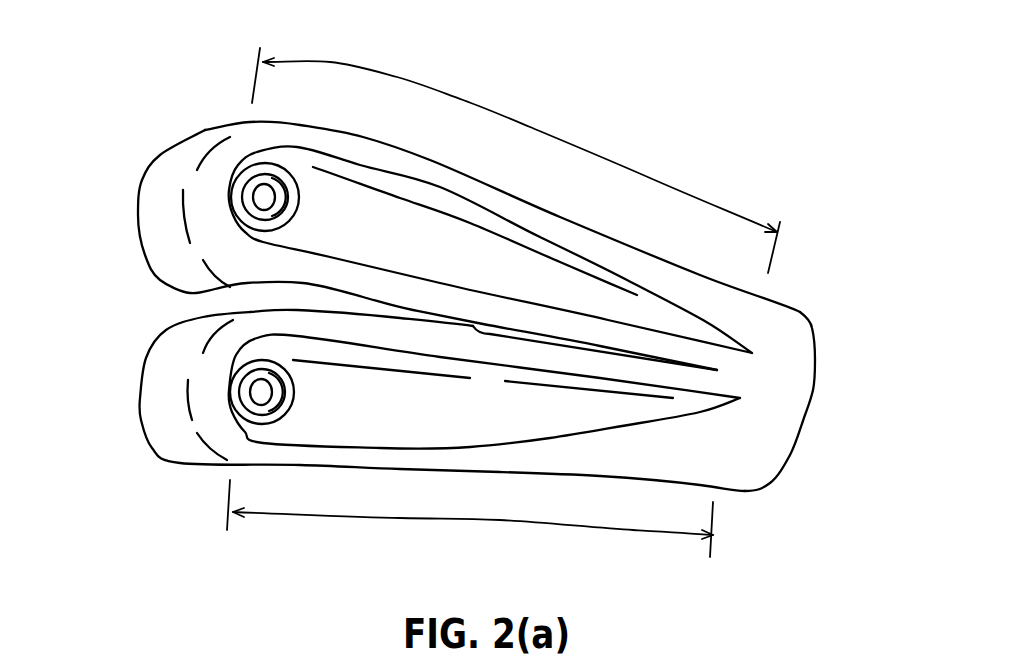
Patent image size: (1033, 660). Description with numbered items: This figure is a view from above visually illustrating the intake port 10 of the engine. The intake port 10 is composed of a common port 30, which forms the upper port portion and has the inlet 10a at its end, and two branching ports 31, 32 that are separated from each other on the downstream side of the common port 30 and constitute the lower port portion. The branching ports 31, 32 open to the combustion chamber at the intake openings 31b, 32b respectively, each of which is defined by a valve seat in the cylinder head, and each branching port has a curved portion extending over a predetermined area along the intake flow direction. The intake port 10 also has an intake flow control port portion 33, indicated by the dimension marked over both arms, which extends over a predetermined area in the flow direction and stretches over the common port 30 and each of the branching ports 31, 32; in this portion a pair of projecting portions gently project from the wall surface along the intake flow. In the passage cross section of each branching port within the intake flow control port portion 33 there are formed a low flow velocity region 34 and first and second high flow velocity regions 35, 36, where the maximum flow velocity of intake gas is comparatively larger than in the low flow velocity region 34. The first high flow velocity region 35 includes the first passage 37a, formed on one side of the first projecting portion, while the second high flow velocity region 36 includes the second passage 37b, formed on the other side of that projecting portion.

The intake port 10 is at (198, 98).
The inlet 10a is at (806, 404).
The common port 30 is at (760, 430).
The branching port 31 is at (331, 421).
The intake opening 31b is at (140, 404).
The branching port 32 is at (353, 210).
The intake opening 32b is at (137, 229).
The intake flow control port portion 33 is at (473, 100).
The low flow velocity region 34 is at (447, 245).
The first high flow velocity region 35 is at (483, 329).
The second high flow velocity region 36 is at (590, 373).
The first passage 37a is at (459, 183).
The second passage 37b is at (447, 284).